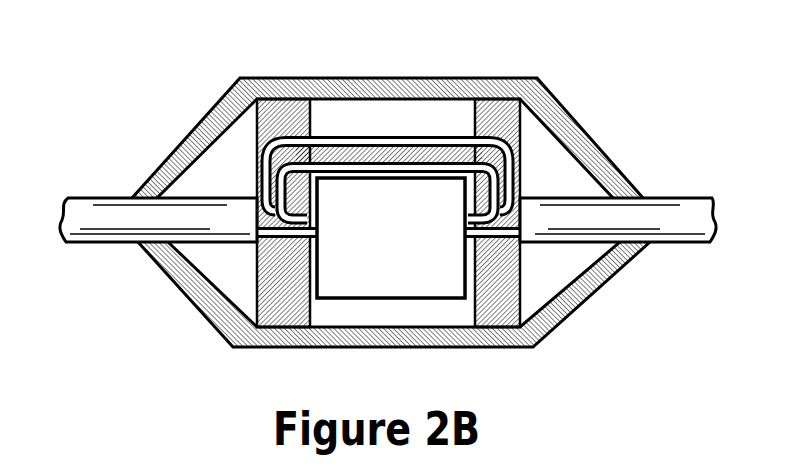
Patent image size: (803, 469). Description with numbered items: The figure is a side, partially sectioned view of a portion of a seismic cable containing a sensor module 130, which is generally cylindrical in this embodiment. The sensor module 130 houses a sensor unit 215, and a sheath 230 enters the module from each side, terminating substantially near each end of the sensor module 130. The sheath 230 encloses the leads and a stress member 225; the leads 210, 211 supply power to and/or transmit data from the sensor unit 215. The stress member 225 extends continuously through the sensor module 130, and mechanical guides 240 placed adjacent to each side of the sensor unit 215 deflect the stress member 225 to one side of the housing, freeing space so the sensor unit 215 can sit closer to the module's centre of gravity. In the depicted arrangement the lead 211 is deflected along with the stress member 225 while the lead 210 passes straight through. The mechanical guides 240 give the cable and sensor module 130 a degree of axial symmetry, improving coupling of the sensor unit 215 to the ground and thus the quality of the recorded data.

The sensor module 130 is at (386, 205).
The lead 210 is at (283, 238).
The lead 211 is at (377, 136).
The sensor unit 215 is at (412, 252).
The stress member 225 is at (348, 161).
The sheath 230 is at (118, 196).
The mechanical guide 240 is at (250, 349).